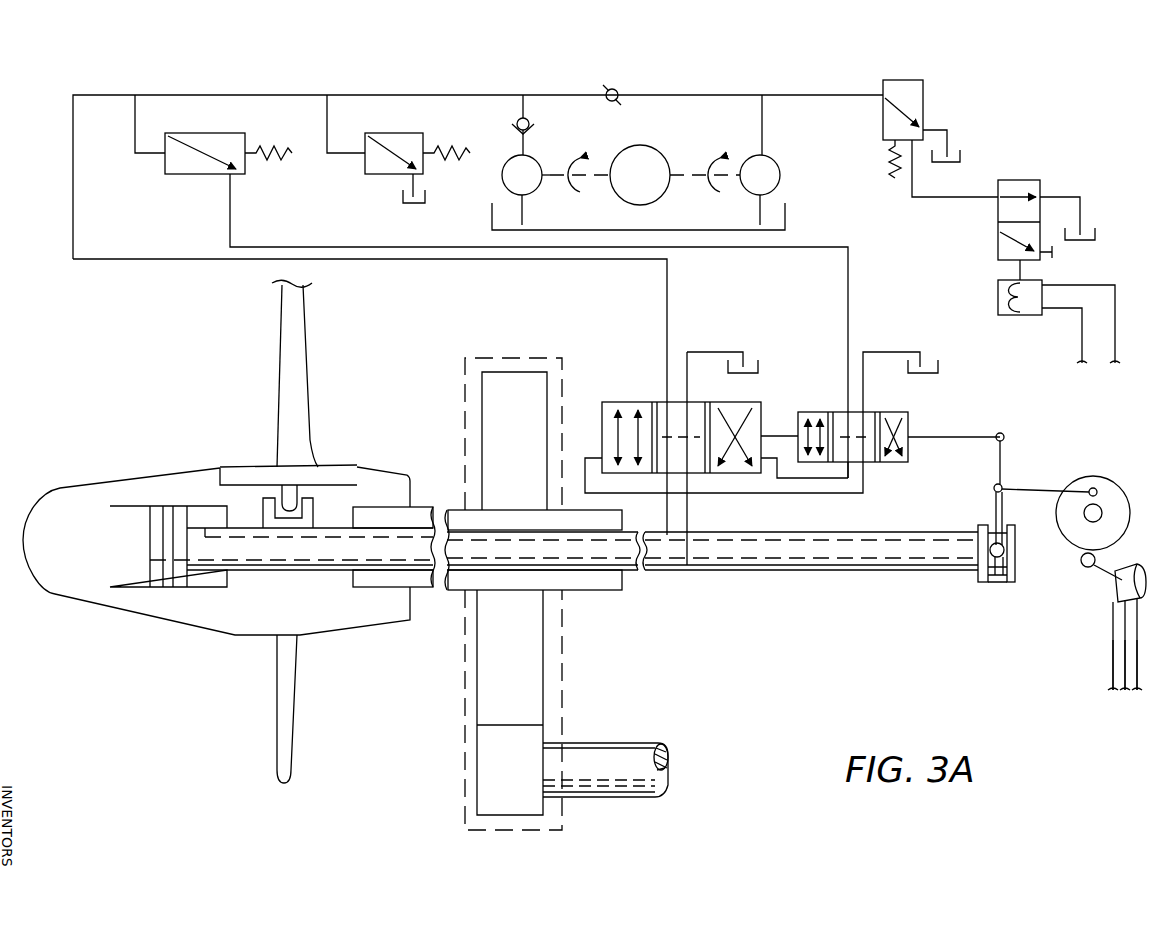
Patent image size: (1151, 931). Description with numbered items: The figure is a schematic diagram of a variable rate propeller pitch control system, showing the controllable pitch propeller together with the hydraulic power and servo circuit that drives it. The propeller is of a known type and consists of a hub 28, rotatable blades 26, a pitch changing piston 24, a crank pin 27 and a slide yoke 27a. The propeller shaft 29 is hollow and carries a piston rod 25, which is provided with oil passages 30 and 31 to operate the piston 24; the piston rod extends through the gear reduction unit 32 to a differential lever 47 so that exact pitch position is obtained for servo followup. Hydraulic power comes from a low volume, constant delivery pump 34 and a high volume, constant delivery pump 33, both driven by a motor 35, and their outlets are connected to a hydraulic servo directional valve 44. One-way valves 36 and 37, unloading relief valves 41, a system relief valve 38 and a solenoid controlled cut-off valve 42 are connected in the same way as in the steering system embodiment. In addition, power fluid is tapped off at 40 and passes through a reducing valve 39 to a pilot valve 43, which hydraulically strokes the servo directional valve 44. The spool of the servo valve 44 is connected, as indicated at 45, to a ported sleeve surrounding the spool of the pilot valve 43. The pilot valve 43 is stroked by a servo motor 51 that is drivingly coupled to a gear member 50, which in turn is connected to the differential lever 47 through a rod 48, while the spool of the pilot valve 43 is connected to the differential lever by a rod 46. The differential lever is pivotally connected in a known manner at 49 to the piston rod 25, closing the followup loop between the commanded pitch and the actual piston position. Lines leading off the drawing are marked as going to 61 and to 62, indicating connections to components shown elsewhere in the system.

The pitch changing piston 24 is at (155, 513).
The piston rod 25 is at (250, 572).
The rotatable blades 26 is at (310, 368).
The crank pin 27 is at (283, 495).
The slide yoke 27a is at (315, 505).
The hub 28 is at (380, 467).
The propeller shaft 29 is at (420, 507).
The oil passage 30 is at (290, 562).
The oil passage 31 is at (340, 538).
The gear reduction unit 32 is at (565, 365).
The high volume, constant delivery pump 33 is at (781, 183).
The low volume, constant delivery pump 34 is at (502, 180).
The motor 35 is at (660, 148).
The one-way valve 36 is at (617, 90).
The one-way valve 37 is at (530, 120).
The system relief valve 38 is at (402, 133).
The reducing valve 39 is at (240, 133).
The power fluid tap 40 is at (140, 93).
The unloading relief valve 41 is at (913, 80).
The solenoid controlled cut-off valve 42 is at (1040, 180).
The pilot valve 43 is at (866, 462).
The servo directional valve 44 is at (752, 402).
The spool-to-sleeve connection 45 is at (780, 432).
The rod 46 is at (957, 437).
The differential lever 47 is at (1003, 468).
The rod 48 is at (1040, 492).
The pivotal connection 49 is at (996, 560).
The gear member 50 is at (1062, 535).
The servo motor 51 is at (1115, 580).
The control station connection 61 is at (1120, 679).
The control station connection 62 is at (1081, 338).